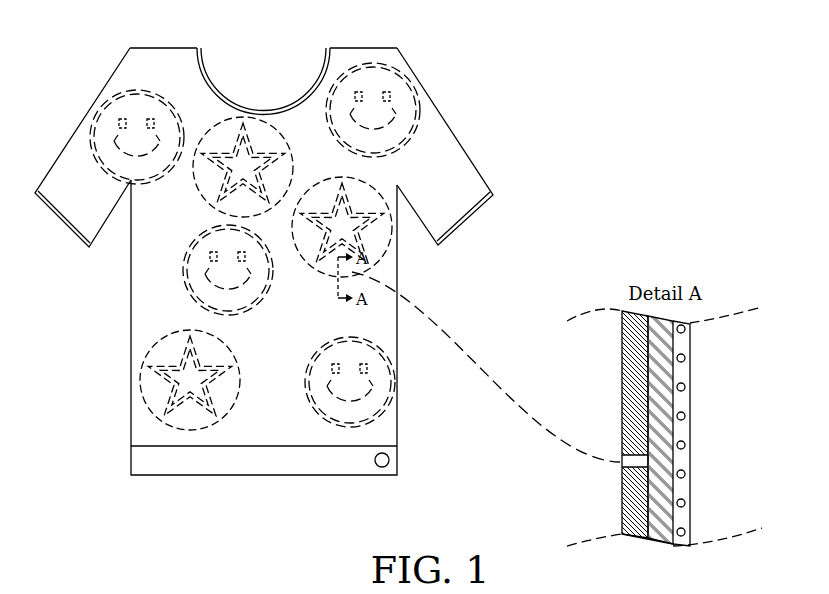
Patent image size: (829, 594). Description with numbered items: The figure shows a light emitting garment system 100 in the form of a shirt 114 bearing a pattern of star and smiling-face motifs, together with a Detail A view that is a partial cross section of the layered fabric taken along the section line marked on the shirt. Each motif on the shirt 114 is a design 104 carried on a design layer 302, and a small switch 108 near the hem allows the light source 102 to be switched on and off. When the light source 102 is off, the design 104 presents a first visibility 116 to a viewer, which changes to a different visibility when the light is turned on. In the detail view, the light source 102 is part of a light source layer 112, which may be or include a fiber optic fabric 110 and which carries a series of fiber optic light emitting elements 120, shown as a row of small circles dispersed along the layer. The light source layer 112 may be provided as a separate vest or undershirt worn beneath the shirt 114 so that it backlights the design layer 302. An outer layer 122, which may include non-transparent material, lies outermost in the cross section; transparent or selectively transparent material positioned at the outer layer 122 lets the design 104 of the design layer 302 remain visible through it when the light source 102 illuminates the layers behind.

The light emitting garment system 100 is at (141, 26).
The shirt 114 is at (120, 78).
The design layer 302 is at (350, 66).
The first visibility 116 is at (290, 146).
The switch 108 is at (368, 461).
The outer layer 122 is at (614, 408).
The fiber optic fabric 110 is at (699, 455).
The light source 102 is at (699, 377).
The light source layer 112 is at (691, 496).
The fiber optic light emitting elements 120 is at (688, 535).
The design 104 is at (657, 550).